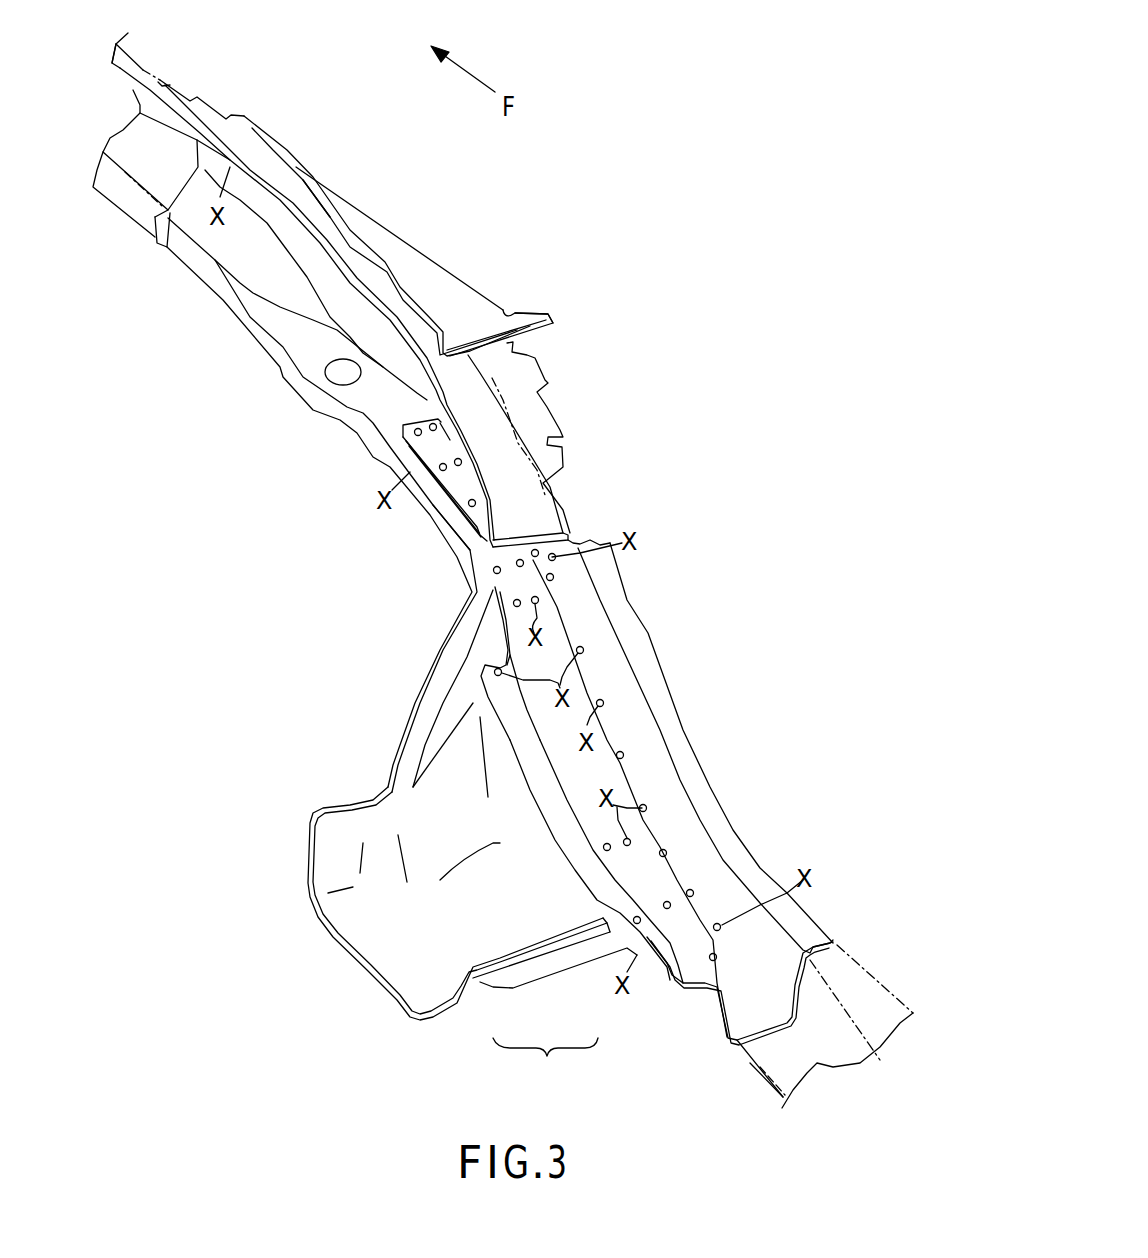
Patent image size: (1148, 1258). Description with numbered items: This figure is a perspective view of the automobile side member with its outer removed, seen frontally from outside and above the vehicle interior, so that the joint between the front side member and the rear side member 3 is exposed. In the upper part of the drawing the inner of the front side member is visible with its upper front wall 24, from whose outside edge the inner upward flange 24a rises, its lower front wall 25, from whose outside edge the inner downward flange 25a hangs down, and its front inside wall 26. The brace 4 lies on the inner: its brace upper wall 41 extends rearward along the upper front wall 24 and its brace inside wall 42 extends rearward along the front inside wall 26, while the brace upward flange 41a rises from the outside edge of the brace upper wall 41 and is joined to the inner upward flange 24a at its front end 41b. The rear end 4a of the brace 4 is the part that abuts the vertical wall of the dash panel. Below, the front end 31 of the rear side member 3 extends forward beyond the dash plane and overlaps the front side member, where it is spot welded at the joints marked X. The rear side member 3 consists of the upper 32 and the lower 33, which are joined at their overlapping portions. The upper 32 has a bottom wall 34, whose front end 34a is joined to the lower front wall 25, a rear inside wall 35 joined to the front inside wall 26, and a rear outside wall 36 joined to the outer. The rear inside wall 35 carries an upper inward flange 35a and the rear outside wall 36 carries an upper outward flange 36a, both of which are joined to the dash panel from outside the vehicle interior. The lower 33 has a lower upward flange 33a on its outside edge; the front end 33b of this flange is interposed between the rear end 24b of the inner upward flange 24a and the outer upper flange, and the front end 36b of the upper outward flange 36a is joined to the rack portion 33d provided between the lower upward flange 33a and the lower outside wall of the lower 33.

The rear side member 3 is at (545, 1065).
The brace 4 is at (428, 268).
The rear end of the brace 4a is at (500, 312).
The upper front wall 24 is at (207, 105).
The inner upward flange 24a is at (172, 95).
The rear end of the inner upward flange 24b is at (517, 520).
The lower front wall 25 is at (263, 313).
The inner downward flange 25a is at (163, 247).
The front inside wall 26 is at (307, 268).
The front end of the rear side member 31 is at (413, 528).
The upper 32 is at (613, 898).
The lower 33 is at (531, 985).
The lower upward flange 33a is at (403, 760).
The front end of the lower upward flange 33b is at (467, 527).
The rack portion 33d is at (467, 687).
The bottom wall 34 is at (740, 1030).
The front end of the bottom wall 34a is at (410, 413).
The rear inside wall 35 is at (677, 808).
The upper inward flange 35a is at (627, 613).
The rear outside wall 36 is at (705, 1003).
The upper outward flange 36a is at (567, 830).
The front end of the upper outward flange 36b is at (402, 458).
The brace upper wall 41 is at (395, 238).
The brace upward flange 41a is at (337, 223).
The front end of the brace upward flange 41b is at (243, 133).
The brace inside wall 42 is at (527, 421).